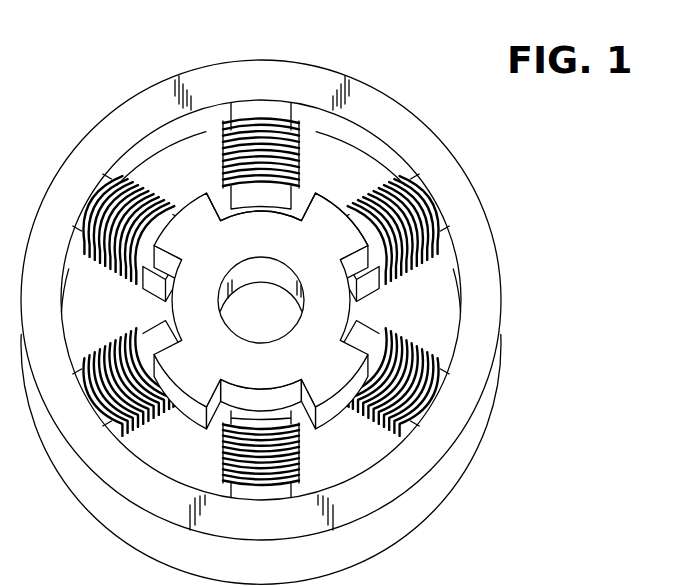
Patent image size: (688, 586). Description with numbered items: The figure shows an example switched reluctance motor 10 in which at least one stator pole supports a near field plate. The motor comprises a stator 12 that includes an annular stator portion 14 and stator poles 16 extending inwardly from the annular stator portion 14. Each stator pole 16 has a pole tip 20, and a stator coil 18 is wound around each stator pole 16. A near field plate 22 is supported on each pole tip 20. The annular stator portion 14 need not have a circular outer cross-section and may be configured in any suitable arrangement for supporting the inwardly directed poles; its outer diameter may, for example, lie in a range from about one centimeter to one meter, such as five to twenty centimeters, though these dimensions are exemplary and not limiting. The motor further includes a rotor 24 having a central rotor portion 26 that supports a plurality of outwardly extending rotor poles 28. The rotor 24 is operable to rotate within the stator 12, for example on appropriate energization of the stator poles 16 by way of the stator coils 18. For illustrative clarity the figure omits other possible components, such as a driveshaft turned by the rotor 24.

The switched reluctance motor 10 is at (283, 305).
The stator 12 is at (484, 264).
The annular stator portion 14 is at (377, 111).
The stator poles 16 is at (270, 117).
The stator coil 18 is at (222, 135).
The pole tip 20 is at (366, 338).
The near field plate 22 is at (280, 197).
The rotor 24 is at (240, 270).
The central rotor portion 26 is at (280, 243).
The rotor poles 28 is at (330, 243).